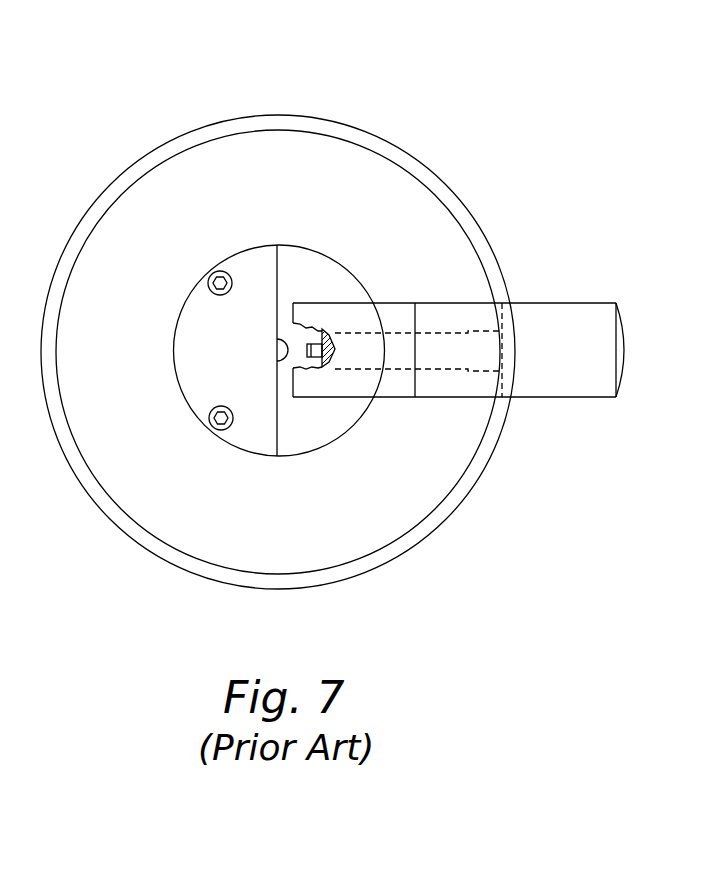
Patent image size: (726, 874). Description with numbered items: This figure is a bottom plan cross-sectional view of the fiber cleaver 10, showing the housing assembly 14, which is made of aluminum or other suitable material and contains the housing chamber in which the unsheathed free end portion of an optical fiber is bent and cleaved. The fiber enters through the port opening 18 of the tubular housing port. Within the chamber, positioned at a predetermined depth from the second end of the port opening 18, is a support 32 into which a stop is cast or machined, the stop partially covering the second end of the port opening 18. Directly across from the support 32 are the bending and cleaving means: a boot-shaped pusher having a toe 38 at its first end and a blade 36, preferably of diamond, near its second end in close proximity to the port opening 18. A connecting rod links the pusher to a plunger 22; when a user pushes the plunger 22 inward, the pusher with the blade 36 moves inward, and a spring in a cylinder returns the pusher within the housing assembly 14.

The fiber cleaver 10 is at (441, 98).
The housing assembly 14 is at (435, 248).
The plunger 22 is at (560, 333).
The support 32 is at (200, 338).
The port opening 18 is at (270, 351).
The blade 36 is at (320, 330).
The toe 38 is at (322, 382).